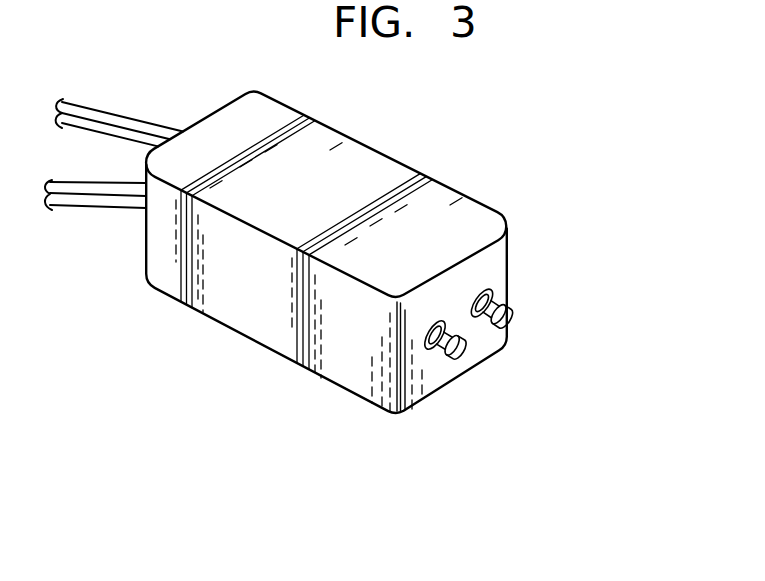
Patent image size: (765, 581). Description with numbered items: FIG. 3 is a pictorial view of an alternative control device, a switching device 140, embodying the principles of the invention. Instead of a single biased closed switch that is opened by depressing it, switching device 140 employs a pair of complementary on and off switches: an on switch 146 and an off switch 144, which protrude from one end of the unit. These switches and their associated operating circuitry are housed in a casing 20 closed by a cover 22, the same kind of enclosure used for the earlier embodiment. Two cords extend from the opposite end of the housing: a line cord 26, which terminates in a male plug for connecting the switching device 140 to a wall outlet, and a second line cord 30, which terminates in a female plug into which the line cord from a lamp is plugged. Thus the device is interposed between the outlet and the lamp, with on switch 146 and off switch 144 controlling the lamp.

The casing 20 is at (270, 351).
The cover 22 is at (393, 160).
The line cord 26 is at (70, 207).
The second line cord 30 is at (101, 122).
The switching device 140 is at (556, 344).
The off switch 144 is at (499, 302).
The on switch 146 is at (436, 352).